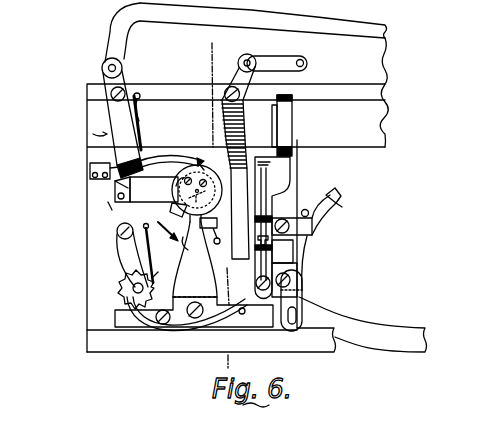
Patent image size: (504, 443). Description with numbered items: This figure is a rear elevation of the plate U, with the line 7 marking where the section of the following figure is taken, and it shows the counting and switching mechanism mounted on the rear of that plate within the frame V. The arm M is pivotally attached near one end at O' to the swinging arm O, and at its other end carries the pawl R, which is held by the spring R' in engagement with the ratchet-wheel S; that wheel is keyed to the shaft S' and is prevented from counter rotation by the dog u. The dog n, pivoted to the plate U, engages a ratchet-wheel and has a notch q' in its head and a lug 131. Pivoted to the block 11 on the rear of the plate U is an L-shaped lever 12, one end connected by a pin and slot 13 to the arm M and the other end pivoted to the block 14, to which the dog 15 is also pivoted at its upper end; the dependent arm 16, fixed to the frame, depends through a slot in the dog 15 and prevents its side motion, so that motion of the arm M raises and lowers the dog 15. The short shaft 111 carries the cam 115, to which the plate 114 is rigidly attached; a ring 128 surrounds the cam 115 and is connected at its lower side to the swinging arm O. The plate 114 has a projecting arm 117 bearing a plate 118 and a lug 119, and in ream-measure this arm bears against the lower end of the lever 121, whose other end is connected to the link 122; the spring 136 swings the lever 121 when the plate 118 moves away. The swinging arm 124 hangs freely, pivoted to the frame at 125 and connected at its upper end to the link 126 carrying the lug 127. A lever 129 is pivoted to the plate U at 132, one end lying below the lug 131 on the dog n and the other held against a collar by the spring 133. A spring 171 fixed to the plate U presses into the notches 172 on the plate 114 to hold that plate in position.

The frame V is at (374, 64).
The link 122 is at (193, 22).
The lever 121 is at (114, 109).
The spring 136 is at (139, 97).
The section line 7 is at (220, 205).
The link 126 is at (266, 60).
The lug 127 is at (305, 63).
The pivot 125 is at (233, 87).
The dog 15 is at (292, 127).
The dependent arm 16 is at (272, 120).
The swinging arm 124 is at (238, 186).
The lever 129 is at (306, 231).
The pivot 132 is at (285, 219).
The lug 131 is at (310, 213).
The notch q' is at (342, 184).
The dog n is at (343, 203).
The block 14 is at (282, 251).
The block 11 is at (297, 269).
The L-shaped lever 12 is at (300, 290).
The pin and slot 13 is at (300, 314).
The arm M is at (343, 321).
The plate 114 is at (206, 174).
The cam 115 is at (177, 160).
The notches 172 is at (203, 158).
The ring 128 is at (180, 183).
The projecting arm 117 is at (154, 189).
The plate 118 is at (114, 183).
The spring 171 is at (100, 166).
The plate U is at (90, 212).
The lug 119 is at (110, 204).
The short shaft 111 is at (178, 202).
The dog u is at (147, 254).
The spring 133 is at (188, 231).
The swinging arm O is at (202, 259).
The pivot O' is at (194, 340).
The ratchet-wheel S is at (127, 289).
The shaft S' is at (165, 271).
The pawl R is at (178, 324).
The spring R' is at (226, 329).